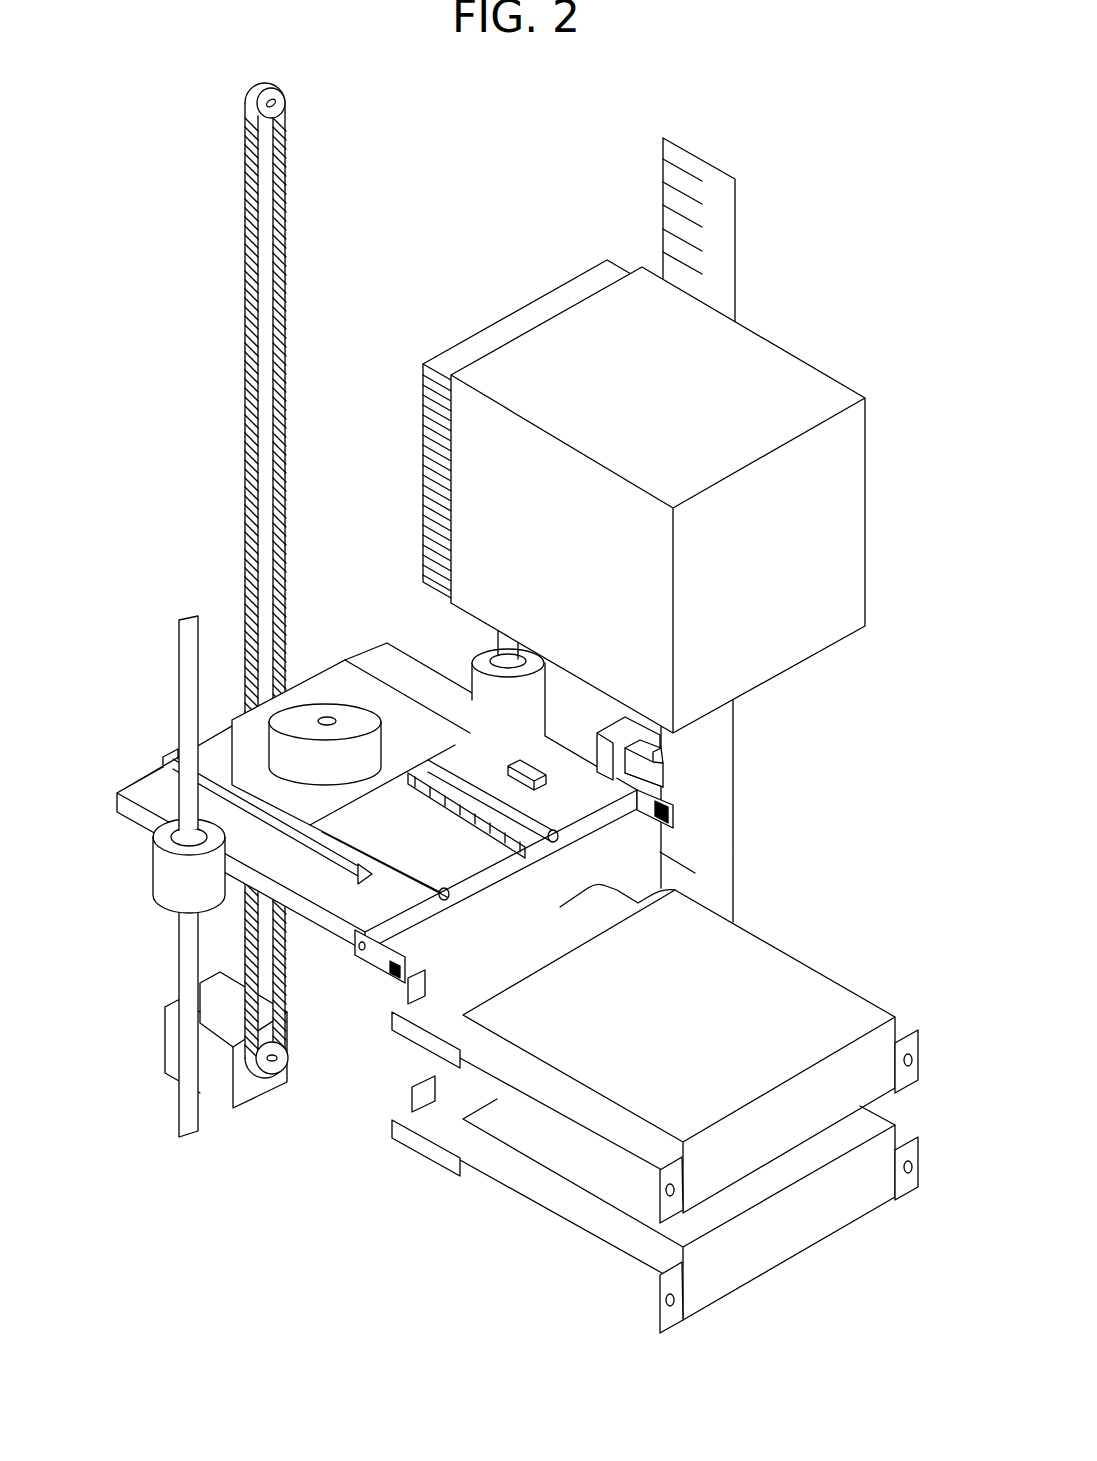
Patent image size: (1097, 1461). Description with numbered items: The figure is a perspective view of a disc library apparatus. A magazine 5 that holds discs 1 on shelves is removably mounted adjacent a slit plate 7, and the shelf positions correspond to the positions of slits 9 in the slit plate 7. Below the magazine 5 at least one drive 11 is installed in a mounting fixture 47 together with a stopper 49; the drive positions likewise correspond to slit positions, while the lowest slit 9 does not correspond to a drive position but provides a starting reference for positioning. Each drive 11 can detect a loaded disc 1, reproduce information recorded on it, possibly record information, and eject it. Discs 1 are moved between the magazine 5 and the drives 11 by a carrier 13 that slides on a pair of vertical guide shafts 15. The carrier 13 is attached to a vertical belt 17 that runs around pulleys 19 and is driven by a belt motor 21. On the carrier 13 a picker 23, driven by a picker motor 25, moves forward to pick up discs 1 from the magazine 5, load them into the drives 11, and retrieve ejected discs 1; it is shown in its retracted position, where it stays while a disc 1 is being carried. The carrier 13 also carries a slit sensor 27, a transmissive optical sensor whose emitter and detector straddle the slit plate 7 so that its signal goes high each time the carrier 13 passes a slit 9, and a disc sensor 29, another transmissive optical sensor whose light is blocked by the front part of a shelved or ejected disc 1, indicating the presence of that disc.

The disc 1 is at (600, 898).
The magazine 5 is at (767, 365).
The slit plate 7 is at (712, 172).
The slits 9 is at (690, 196).
The drive 11 is at (768, 1006).
The carrier 13 is at (383, 662).
The vertical guide shafts 15 is at (188, 678).
The vertical belt 17 is at (287, 248).
The pulleys 19 is at (285, 101).
The belt motor 21 is at (247, 1083).
The picker 23 is at (327, 680).
The picker motor 25 is at (280, 755).
The slit sensor 27 is at (663, 773).
The disc sensor 29 is at (377, 960).
The mounting fixtures 47 is at (517, 1210).
The stoppers 49 is at (405, 1130).